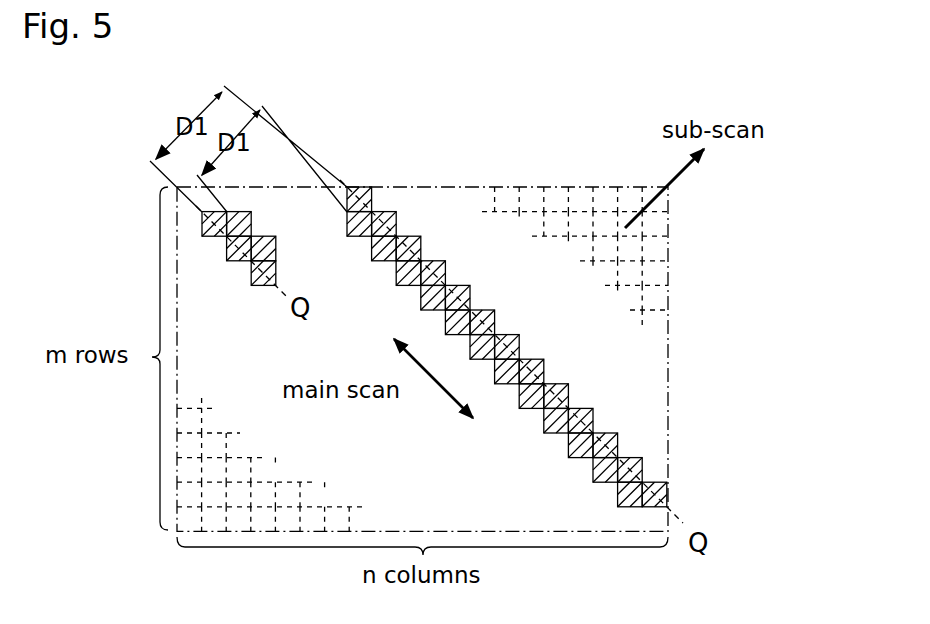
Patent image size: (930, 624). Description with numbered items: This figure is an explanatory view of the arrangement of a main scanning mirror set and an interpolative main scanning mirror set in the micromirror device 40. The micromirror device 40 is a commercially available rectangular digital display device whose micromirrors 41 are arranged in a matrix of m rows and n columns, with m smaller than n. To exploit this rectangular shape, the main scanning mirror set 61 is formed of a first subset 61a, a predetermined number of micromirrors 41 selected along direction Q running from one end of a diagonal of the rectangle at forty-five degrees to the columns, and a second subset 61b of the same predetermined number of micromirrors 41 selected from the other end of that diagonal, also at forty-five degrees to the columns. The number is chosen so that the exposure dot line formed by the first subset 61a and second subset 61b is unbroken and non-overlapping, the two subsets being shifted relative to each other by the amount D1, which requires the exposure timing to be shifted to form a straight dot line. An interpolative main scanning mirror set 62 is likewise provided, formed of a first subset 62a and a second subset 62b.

The micromirror device 40 is at (513, 185).
The micromirrors 41 is at (658, 300).
The main scanning mirror set 61 is at (420, 369).
The first subset 61a is at (545, 438).
The second subset 61b is at (230, 268).
The interpolative main scanning mirror set 62 is at (447, 347).
The first subset 62a is at (552, 360).
The second subset 62b is at (285, 238).